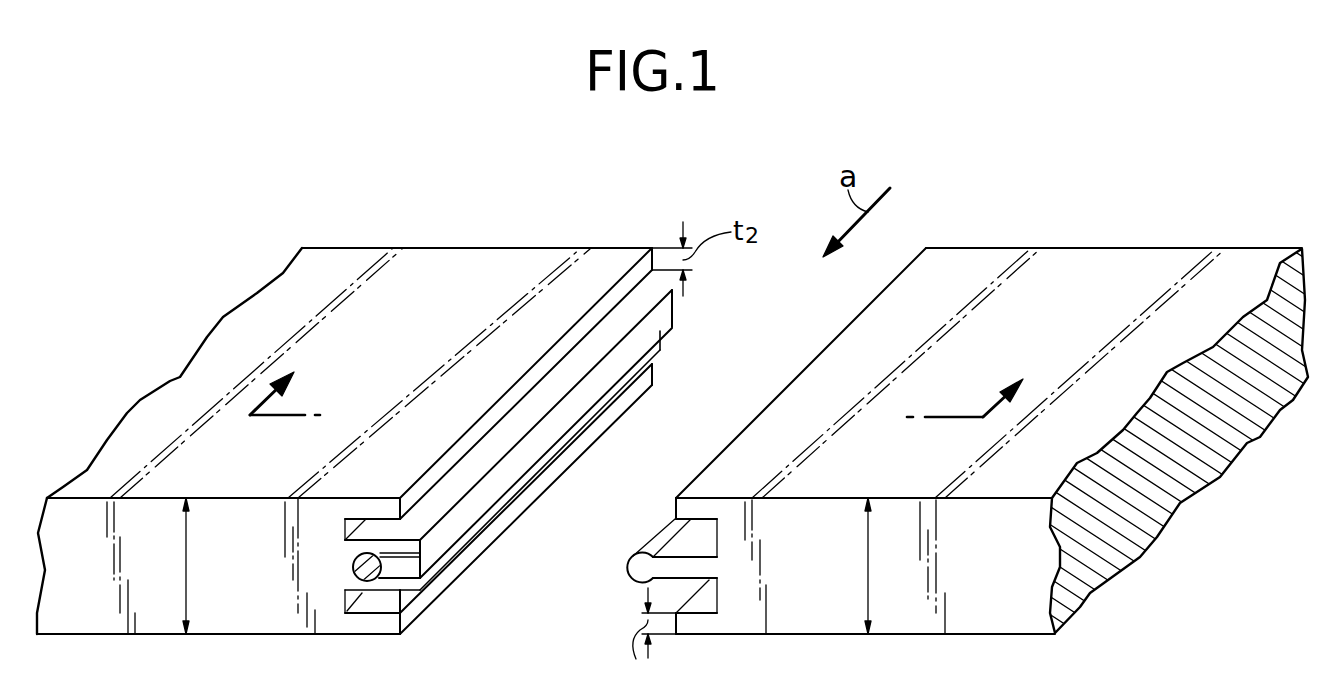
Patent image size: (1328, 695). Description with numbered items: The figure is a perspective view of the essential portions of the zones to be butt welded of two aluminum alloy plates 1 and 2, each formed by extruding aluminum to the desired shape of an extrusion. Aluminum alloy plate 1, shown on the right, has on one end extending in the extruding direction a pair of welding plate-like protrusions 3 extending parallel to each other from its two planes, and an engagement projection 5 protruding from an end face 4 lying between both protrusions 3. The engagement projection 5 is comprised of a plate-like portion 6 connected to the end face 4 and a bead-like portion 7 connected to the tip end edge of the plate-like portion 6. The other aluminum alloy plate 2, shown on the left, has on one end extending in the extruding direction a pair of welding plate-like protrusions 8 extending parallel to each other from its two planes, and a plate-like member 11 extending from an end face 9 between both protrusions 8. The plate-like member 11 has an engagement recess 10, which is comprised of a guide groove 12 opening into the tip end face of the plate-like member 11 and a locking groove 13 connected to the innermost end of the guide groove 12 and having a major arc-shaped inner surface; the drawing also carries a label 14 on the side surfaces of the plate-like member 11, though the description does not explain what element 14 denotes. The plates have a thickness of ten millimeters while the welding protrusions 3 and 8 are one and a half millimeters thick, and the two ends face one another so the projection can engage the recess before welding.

The aluminum alloy plate 1 is at (939, 390).
The aluminum alloy plate 2 is at (354, 425).
The welding plate-like protrusions 3 is at (694, 506).
The end face 4 is at (722, 592).
The engagement projection 5 is at (618, 592).
The plate-like portion 6 is at (688, 562).
The bead-like portion 7 is at (640, 559).
The welding plate-like protrusions 8 is at (380, 507).
The end face 9 is at (343, 605).
The engagement recess 10 is at (427, 580).
The plate-like member 11 is at (520, 426).
The guide groove 12 is at (488, 500).
The locking groove 13 is at (356, 561).
The side surfaces 14 is at (600, 370).